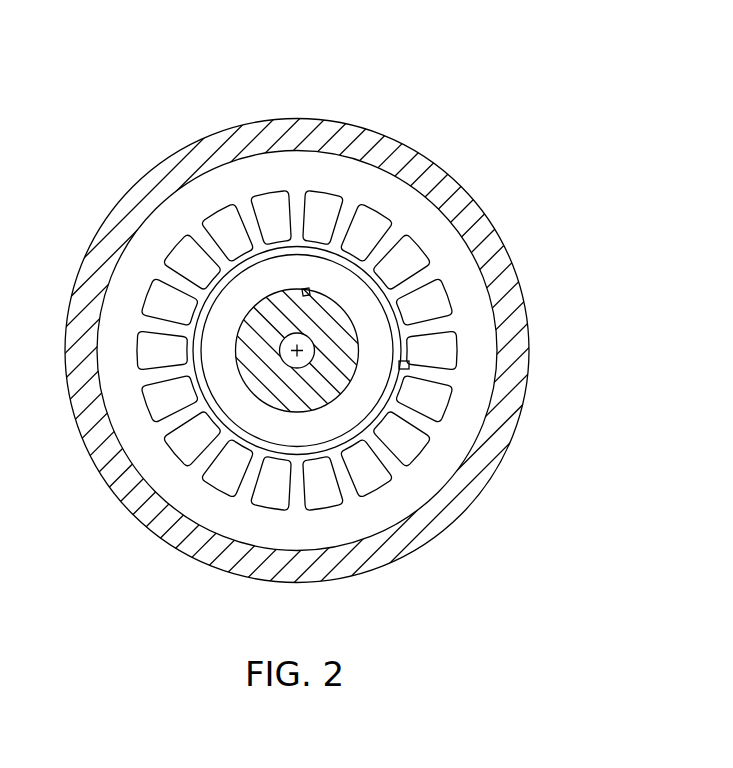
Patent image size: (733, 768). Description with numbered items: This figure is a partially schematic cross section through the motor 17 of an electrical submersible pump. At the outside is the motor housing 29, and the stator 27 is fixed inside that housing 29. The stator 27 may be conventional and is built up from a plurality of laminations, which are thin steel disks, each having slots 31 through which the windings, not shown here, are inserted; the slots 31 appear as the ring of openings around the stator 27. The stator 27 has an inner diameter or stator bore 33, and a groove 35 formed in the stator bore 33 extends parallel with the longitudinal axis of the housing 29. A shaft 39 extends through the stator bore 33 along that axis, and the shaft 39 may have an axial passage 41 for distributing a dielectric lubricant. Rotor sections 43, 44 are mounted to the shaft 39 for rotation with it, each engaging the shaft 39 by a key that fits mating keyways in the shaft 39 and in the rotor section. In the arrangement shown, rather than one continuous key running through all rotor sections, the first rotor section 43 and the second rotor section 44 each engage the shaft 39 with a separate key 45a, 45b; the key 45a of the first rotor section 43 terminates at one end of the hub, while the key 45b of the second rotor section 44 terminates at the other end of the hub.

The motor 17 is at (413, 84).
The stator 27 is at (368, 351).
The motor housing 29 is at (446, 514).
The slots 31 is at (421, 291).
The stator bore 33 is at (392, 340).
The groove 35 is at (409, 367).
The shaft 39 is at (280, 378).
The axial passage 41 is at (280, 356).
The first rotor section 43 is at (204, 312).
The second rotor section 44 is at (230, 297).
The key 45a is at (225, 188).
The key 45b is at (311, 286).